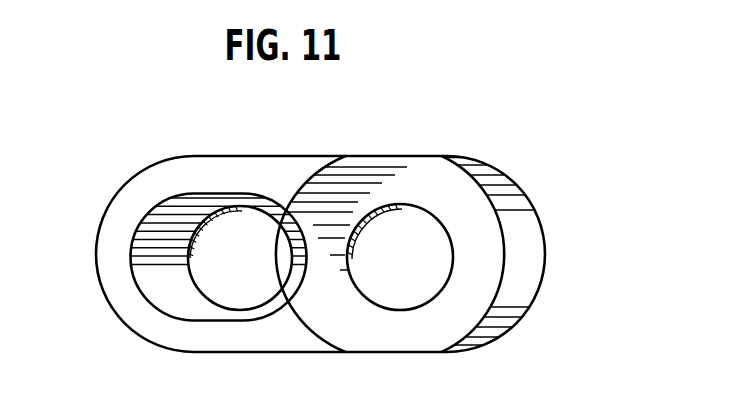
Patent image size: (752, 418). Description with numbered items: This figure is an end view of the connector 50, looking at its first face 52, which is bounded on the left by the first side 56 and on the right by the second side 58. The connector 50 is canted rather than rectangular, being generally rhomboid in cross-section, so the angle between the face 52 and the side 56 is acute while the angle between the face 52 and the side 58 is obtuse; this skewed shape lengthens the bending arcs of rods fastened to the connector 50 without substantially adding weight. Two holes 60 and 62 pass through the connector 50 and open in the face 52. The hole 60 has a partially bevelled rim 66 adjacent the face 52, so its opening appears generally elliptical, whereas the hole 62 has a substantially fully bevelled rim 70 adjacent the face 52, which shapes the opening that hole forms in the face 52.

The connector 50 is at (632, 178).
The first face 52 is at (198, 173).
The first side 56 is at (93, 245).
The second side 58 is at (522, 257).
The hole 60 is at (217, 270).
The hole 62 is at (378, 270).
The partially bevelled rim 66 is at (167, 282).
The substantially fully bevelled rim 70 is at (472, 208).